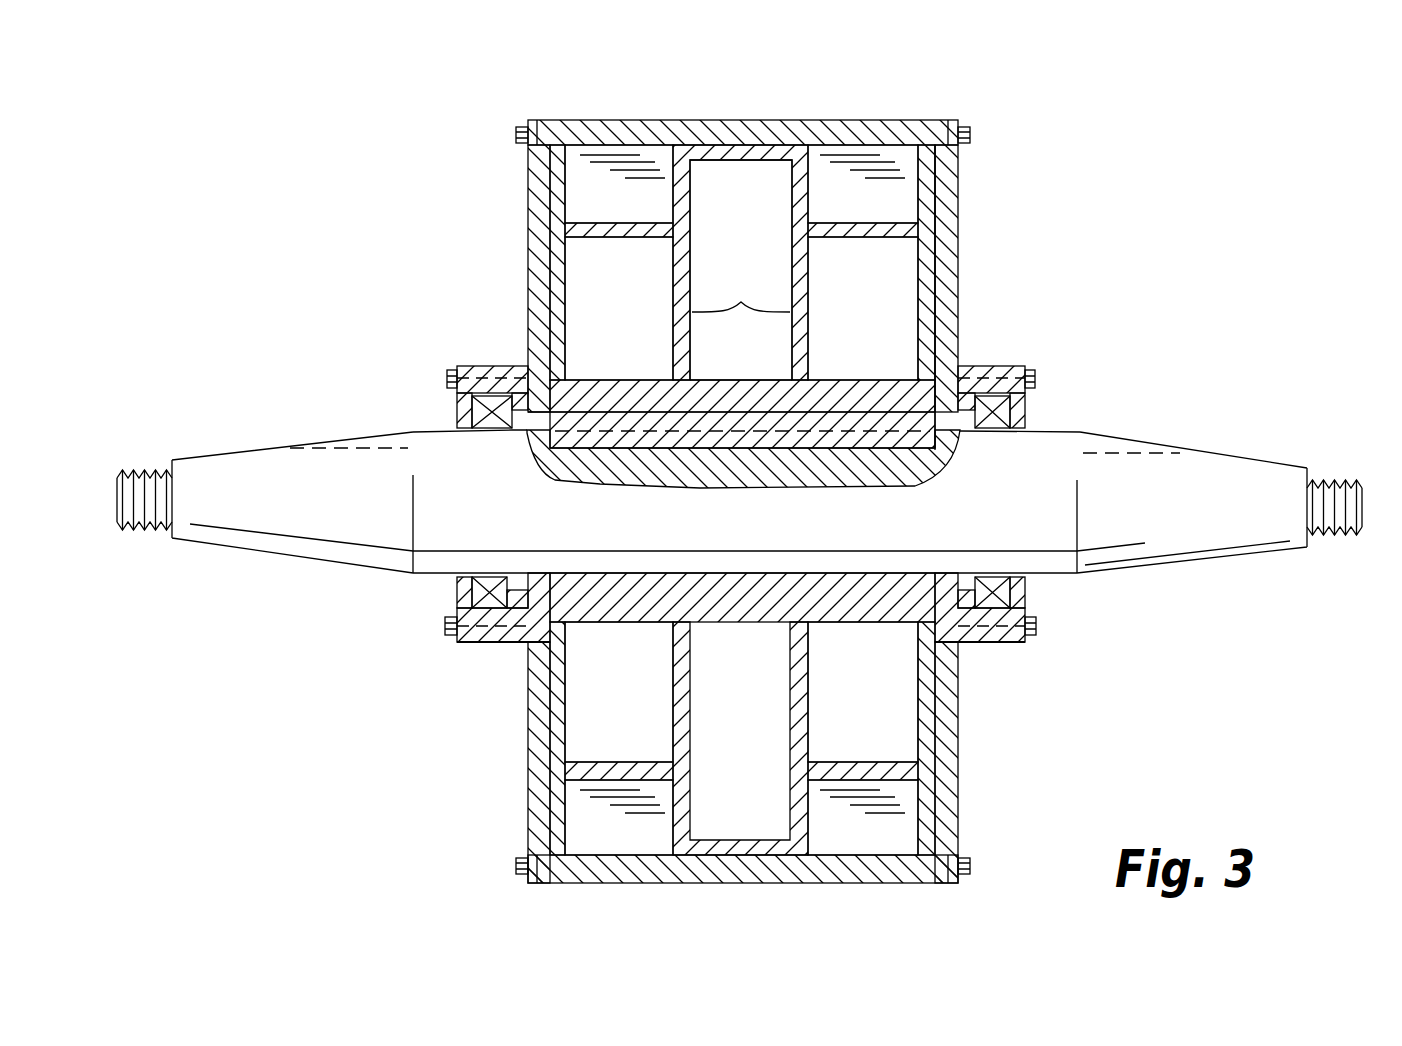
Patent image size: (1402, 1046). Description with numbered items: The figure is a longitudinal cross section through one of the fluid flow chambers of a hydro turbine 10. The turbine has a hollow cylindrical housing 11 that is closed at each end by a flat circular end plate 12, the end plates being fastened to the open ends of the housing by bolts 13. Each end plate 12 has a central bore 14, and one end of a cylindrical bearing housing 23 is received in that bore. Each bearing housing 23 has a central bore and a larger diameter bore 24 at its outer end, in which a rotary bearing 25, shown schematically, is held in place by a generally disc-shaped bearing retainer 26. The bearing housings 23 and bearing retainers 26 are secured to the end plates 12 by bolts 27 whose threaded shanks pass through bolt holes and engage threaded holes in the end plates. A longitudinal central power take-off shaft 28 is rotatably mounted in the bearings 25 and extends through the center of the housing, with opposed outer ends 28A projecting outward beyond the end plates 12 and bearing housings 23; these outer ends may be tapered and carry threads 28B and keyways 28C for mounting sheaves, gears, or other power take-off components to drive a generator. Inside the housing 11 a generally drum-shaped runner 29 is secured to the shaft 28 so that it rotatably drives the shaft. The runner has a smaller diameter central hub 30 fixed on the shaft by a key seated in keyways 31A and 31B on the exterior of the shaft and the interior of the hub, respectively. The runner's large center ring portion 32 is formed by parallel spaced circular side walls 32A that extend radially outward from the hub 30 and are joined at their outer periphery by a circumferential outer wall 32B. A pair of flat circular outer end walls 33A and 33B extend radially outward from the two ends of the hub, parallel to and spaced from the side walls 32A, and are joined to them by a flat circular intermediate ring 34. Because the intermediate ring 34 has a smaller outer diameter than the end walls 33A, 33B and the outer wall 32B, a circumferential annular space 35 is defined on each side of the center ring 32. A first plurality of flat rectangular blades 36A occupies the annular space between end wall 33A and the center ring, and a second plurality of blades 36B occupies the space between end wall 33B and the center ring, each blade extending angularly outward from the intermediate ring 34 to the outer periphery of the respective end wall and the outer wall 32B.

The hydro turbine 10 is at (1108, 246).
The housing 11 is at (806, 120).
The end plate 12 is at (528, 183).
The bolt 13 is at (517, 134).
The central bore 14 is at (528, 390).
The bearing housing 23 is at (497, 643).
The larger diameter bore 24 is at (490, 608).
The rotary bearing 25 is at (478, 420).
The bearing retainer 26 is at (455, 598).
The bolt 27 is at (450, 375).
The power take-off shaft 28 is at (345, 552).
The outer end 28A is at (258, 460).
The threads 28B is at (150, 468).
The keyway 28C is at (375, 440).
The runner 29 is at (940, 300).
The central hub 30 is at (731, 398).
The keyway 31A is at (860, 455).
The keyway 31B is at (635, 414).
The center ring portion 32 is at (735, 150).
The side wall 32A is at (741, 291).
The circumferential outer wall 32B is at (732, 158).
The outer end wall 33A is at (570, 800).
The outer end wall 33B is at (915, 800).
The intermediate ring 34 is at (595, 238).
The circumferential annular space 35 is at (580, 210).
The first plurality of blades 36A is at (622, 158).
The second plurality of blades 36B is at (890, 165).